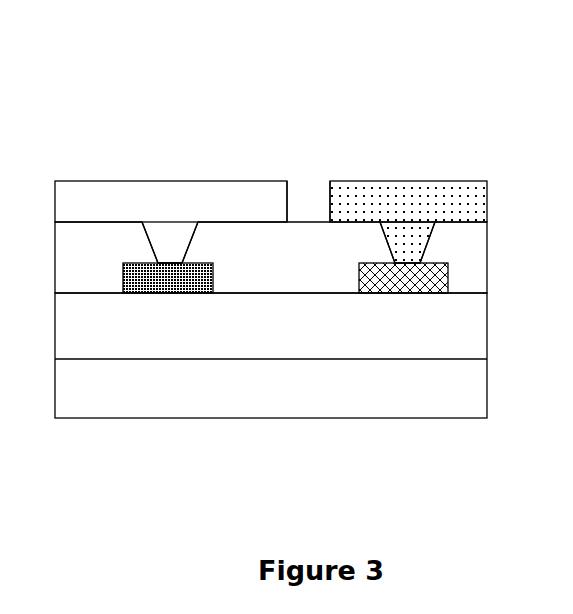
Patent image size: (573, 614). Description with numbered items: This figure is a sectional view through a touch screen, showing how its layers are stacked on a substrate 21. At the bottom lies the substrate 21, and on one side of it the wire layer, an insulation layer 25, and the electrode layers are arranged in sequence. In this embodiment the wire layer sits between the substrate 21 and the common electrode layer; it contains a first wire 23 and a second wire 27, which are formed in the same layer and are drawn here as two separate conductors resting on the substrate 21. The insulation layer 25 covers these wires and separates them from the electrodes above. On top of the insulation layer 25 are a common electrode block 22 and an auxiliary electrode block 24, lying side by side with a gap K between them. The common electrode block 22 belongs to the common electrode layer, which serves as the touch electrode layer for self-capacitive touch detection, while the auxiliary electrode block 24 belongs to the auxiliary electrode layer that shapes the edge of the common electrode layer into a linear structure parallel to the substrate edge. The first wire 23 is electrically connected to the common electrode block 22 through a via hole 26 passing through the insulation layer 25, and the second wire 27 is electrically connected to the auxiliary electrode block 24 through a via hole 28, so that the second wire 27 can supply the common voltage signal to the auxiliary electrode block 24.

The substrate 21 is at (288, 390).
The common electrode block 22 is at (450, 202).
The first wire 23 is at (388, 284).
The auxiliary electrode block 24 is at (112, 207).
The insulation layer 25 is at (258, 257).
The via hole 26 is at (403, 246).
The second wire 27 is at (155, 284).
The via hole 28 is at (177, 248).
The gap K is at (315, 203).